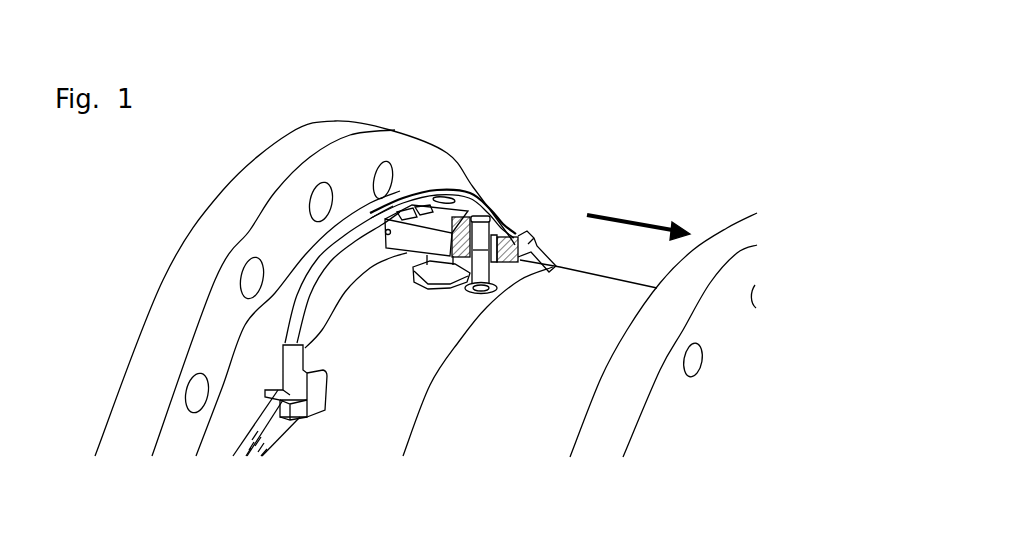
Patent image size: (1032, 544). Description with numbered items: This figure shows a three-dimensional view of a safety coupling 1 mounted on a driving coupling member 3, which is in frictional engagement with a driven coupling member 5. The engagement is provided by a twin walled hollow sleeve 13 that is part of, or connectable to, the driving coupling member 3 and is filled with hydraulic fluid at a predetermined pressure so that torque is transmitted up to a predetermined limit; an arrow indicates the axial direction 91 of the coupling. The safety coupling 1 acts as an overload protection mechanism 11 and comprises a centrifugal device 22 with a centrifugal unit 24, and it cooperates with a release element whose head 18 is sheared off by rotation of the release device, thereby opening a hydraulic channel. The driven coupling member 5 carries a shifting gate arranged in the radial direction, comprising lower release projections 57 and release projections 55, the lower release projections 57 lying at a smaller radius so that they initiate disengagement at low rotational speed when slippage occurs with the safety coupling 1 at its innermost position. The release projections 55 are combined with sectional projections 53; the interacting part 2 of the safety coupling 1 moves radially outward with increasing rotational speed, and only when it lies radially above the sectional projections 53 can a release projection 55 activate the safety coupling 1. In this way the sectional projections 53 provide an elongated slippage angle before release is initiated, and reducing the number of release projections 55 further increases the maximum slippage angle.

The safety coupling 1 is at (495, 289).
The interacting part of the safety coupling 2 is at (418, 196).
The driving coupling member 3 is at (660, 385).
The driven coupling member 5 is at (185, 207).
The overload protection mechanism 11 is at (539, 207).
The twin walled hollow sleeve 13 is at (420, 343).
The head of release element 18 is at (485, 262).
The centrifugal device 22 is at (522, 207).
The centrifugal unit 24 is at (413, 240).
The sectional projections 53 is at (318, 298).
The release projections 55 is at (282, 360).
The lower release projections 57 is at (283, 400).
The axial direction 91 is at (630, 222).